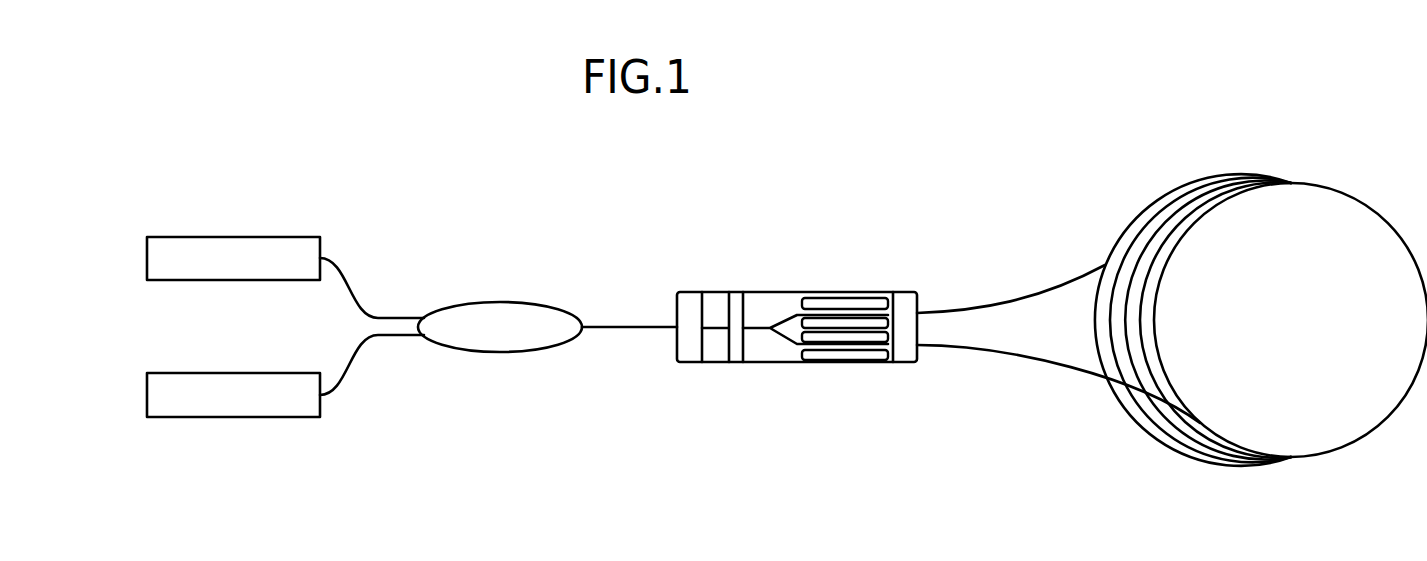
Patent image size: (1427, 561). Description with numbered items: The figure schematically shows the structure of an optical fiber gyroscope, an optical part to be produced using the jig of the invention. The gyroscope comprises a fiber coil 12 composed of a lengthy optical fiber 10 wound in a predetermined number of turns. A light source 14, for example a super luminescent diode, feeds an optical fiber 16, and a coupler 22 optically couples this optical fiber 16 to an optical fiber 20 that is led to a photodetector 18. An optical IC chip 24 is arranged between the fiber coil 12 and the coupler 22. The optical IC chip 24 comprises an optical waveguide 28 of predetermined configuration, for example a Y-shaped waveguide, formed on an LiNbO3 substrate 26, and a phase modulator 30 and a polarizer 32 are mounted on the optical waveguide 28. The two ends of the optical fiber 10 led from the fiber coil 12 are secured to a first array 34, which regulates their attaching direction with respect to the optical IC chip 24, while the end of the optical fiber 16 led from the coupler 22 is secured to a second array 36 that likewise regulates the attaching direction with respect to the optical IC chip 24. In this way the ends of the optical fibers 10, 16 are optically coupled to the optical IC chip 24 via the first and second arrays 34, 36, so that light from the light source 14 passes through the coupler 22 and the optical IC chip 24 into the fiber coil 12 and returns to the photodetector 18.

The optical fiber 10 is at (1010, 302).
The fiber coil 12 is at (1298, 207).
The light source 14 is at (229, 237).
The optical fiber 16 is at (351, 272).
The photodetector 18 is at (247, 418).
The optical fiber 20 is at (349, 384).
The coupler 22 is at (489, 302).
The optical IC chip 24 is at (783, 278).
The LiNbO3 substrate 26 is at (714, 292).
The optical waveguide 28 is at (759, 330).
The phase modulator 30 is at (860, 361).
The polarizer 32 is at (737, 361).
The first array 34 is at (905, 300).
The second array 36 is at (689, 296).